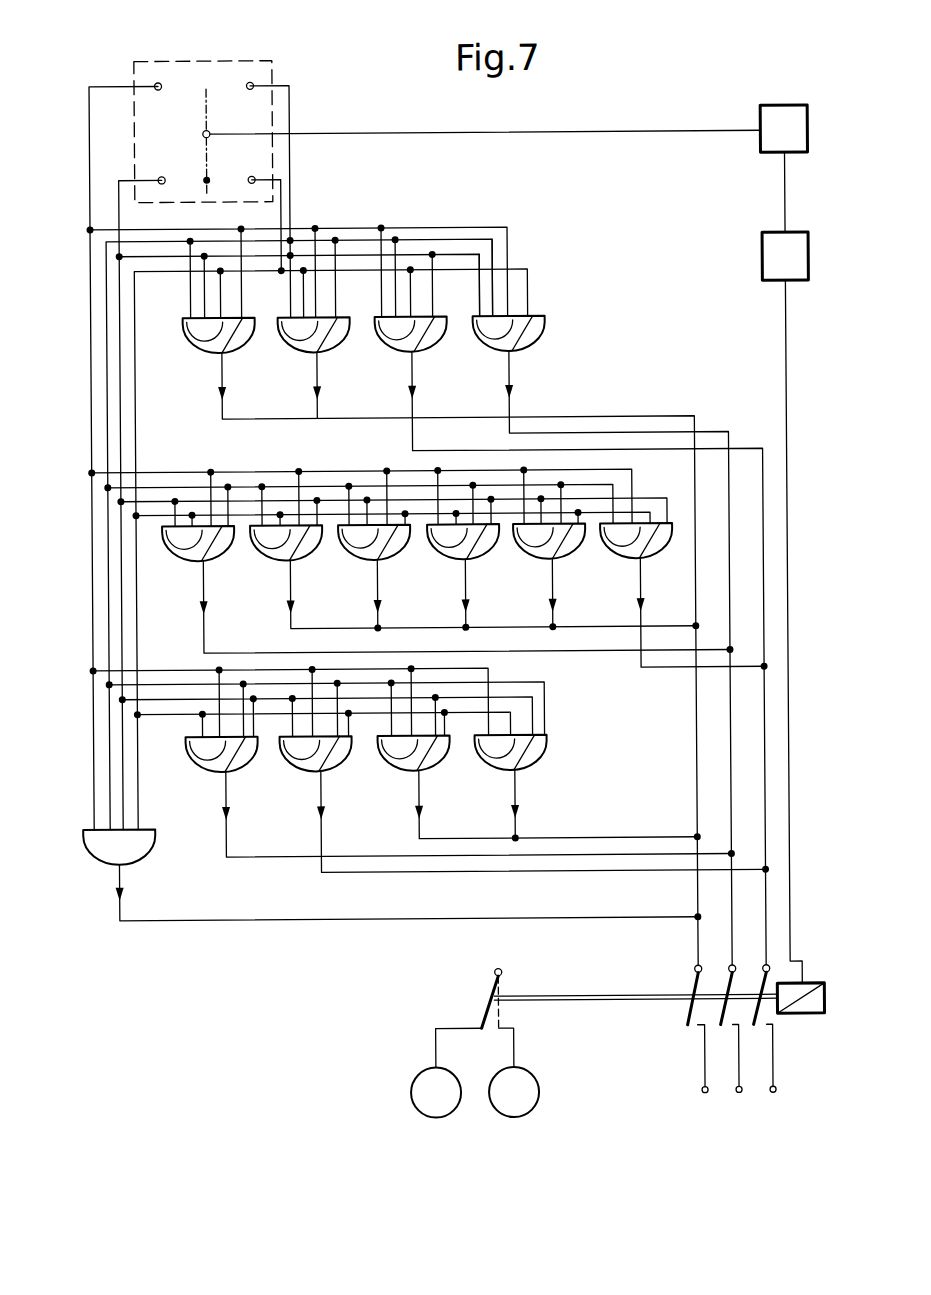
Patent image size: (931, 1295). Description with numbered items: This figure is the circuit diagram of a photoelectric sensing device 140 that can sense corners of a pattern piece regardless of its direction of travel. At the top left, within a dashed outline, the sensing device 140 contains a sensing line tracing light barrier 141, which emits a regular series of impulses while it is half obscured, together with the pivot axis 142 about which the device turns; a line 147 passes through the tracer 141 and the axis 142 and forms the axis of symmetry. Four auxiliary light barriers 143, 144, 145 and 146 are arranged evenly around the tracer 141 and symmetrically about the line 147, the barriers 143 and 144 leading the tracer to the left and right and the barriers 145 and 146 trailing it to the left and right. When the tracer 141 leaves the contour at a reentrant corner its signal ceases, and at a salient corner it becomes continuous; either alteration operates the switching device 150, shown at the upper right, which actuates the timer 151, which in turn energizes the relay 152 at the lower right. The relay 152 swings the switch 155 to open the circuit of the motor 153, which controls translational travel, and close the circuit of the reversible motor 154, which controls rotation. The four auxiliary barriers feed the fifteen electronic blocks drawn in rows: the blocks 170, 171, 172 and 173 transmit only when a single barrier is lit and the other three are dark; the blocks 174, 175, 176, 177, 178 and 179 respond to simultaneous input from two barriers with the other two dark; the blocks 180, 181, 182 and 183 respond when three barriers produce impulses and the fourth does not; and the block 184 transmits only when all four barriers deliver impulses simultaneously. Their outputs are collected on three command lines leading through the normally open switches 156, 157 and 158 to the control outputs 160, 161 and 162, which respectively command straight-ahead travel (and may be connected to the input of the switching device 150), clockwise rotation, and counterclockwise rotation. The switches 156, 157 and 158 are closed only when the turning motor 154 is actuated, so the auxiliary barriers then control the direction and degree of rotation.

The sensing device 140 is at (222, 62).
The tracer light barrier 141 is at (204, 135).
The pivot axis 142 is at (204, 180).
The auxiliary light barrier 143 is at (159, 83).
The auxiliary light barrier 144 is at (254, 86).
The auxiliary light barrier 145 is at (159, 180).
The auxiliary light barrier 146 is at (255, 180).
The axis of symmetry 147 is at (208, 97).
The switching device 150 is at (760, 122).
The timer 151 is at (761, 265).
The relay 152 is at (795, 1018).
The motor 153 is at (410, 1112).
The reversible motor 154 is at (530, 1112).
The switch 155 is at (487, 994).
The switch 156 is at (686, 990).
The switch 157 is at (712, 1030).
The switch 158 is at (748, 1020).
The control output 160 is at (699, 1098).
The control output 161 is at (733, 1098).
The control output 162 is at (767, 1098).
The electronic block 170 is at (195, 354).
The electronic block 171 is at (302, 354).
The electronic block 172 is at (397, 354).
The electronic block 173 is at (498, 354).
The electronic block 174 is at (182, 564).
The electronic block 175 is at (272, 564).
The electronic block 176 is at (360, 564).
The electronic block 177 is at (448, 564).
The electronic block 178 is at (535, 564).
The electronic block 179 is at (628, 564).
The electronic block 180 is at (192, 775).
The electronic block 181 is at (302, 775).
The electronic block 182 is at (396, 775).
The electronic block 183 is at (500, 775).
The electronic block 184 is at (145, 852).